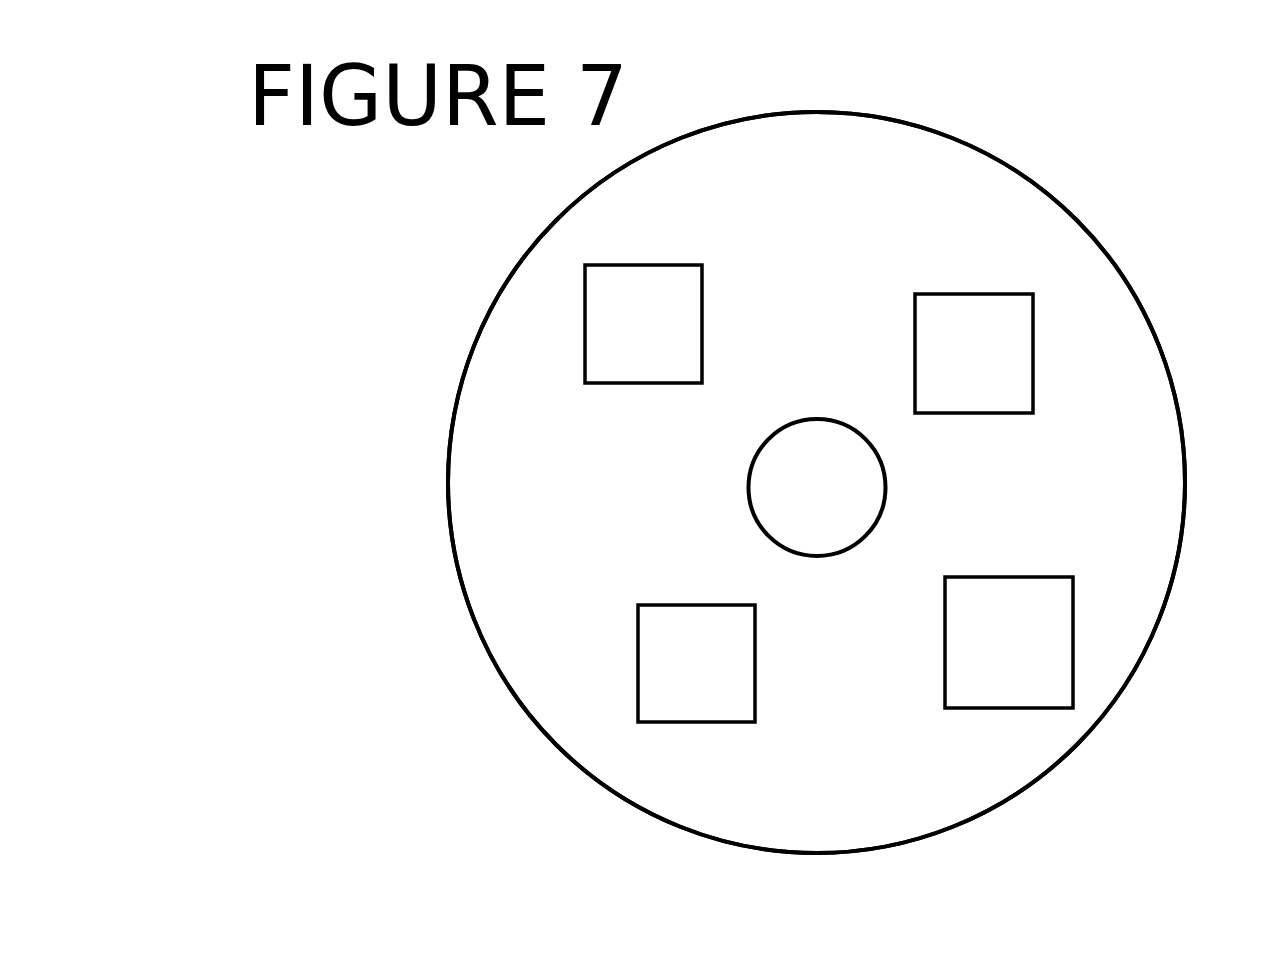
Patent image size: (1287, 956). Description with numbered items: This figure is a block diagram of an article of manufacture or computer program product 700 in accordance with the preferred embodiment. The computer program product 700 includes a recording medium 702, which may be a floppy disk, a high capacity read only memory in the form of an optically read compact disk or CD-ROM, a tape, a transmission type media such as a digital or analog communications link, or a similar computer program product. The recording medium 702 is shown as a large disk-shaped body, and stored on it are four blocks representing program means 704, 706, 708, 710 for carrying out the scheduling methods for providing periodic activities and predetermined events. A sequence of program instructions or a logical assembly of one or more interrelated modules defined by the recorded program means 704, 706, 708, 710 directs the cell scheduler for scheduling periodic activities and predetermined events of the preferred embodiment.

The computer program product 700 is at (1132, 238).
The recording medium 702 is at (513, 272).
The program means 704 is at (974, 353).
The program means 706 is at (1009, 642).
The program means 708 is at (696, 663).
The program means 710 is at (643, 324).